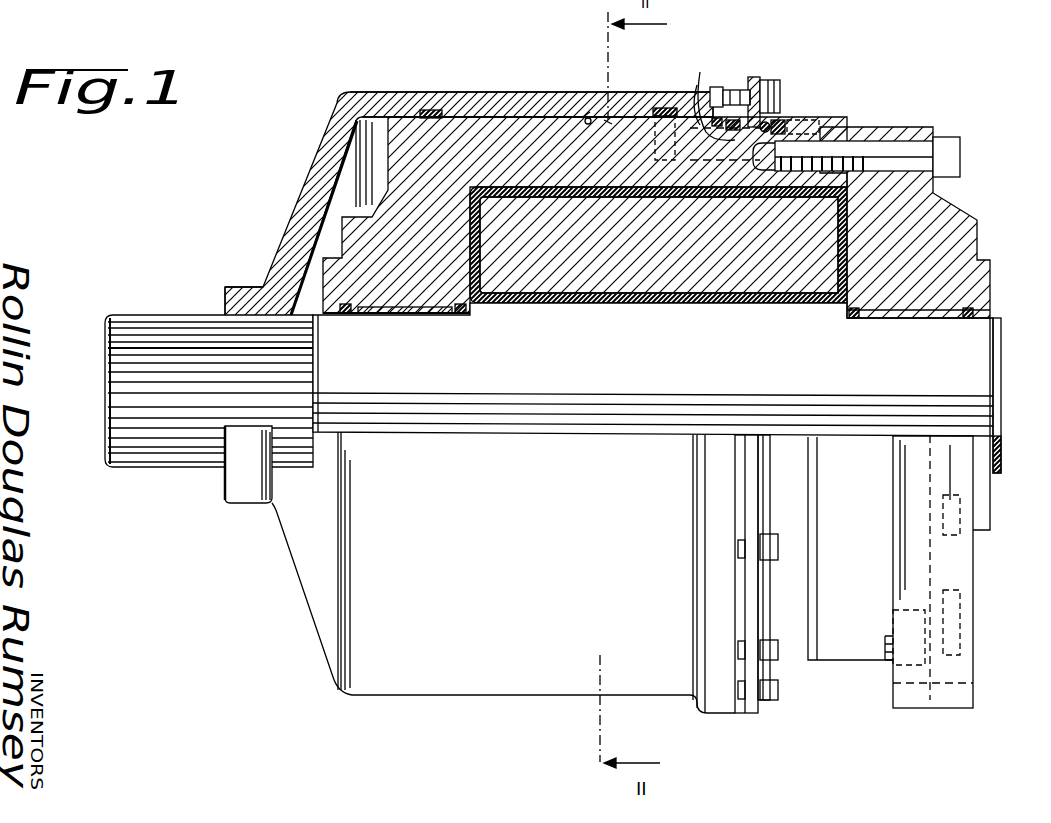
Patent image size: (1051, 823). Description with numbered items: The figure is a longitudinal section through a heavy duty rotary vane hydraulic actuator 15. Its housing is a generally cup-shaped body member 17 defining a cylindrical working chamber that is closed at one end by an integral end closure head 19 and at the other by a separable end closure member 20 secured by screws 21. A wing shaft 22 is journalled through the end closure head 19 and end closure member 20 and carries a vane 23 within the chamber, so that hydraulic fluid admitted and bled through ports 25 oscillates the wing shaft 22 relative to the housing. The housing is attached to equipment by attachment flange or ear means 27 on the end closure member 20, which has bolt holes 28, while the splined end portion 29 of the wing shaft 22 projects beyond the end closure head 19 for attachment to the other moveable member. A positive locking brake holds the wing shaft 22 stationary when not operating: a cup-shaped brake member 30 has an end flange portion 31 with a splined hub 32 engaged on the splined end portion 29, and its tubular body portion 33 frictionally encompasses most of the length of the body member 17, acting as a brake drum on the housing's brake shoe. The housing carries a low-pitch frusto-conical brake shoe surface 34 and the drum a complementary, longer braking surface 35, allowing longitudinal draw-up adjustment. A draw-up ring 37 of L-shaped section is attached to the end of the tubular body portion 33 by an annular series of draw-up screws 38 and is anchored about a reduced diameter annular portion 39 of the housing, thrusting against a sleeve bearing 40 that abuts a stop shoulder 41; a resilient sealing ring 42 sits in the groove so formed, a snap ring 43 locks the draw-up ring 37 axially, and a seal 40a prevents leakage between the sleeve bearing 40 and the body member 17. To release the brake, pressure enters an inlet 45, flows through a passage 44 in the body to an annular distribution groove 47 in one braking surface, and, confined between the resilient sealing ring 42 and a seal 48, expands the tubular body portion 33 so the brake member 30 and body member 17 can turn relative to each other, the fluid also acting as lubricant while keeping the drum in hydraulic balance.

The rotary vane hydraulic actuator 15 is at (842, 97).
The body member 17 is at (525, 134).
The end closure head 19 is at (340, 237).
The end closure member 20 is at (945, 218).
The screws 21 is at (951, 140).
The wing shaft 22 is at (746, 365).
The vane 23 is at (640, 272).
The ports 25 is at (890, 656).
The attachment flange or ear means 27 is at (918, 707).
The bolt holes 28 is at (950, 686).
The splined end portion 29 is at (188, 430).
The brake member 30 is at (348, 97).
The end flange portion 31 is at (316, 188).
The splined hub 32 is at (236, 296).
The tubular body portion 33 is at (555, 95).
The brake shoe surface 34 is at (610, 118).
The braking surface 35 is at (588, 118).
The draw-up ring 37 is at (750, 85).
The draw-up screws 38 is at (778, 92).
The reduced diameter annular portion 39 is at (770, 123).
The sleeve bearing 40 is at (702, 128).
The seal 40a is at (716, 128).
The stop shoulder 41 is at (712, 118).
The resilient sealing ring 42 is at (730, 120).
The snap ring 43 is at (784, 128).
The passage 44 is at (586, 116).
The inlet 45 is at (800, 128).
The annular distribution groove 47 is at (661, 108).
The seal 48 is at (432, 111).